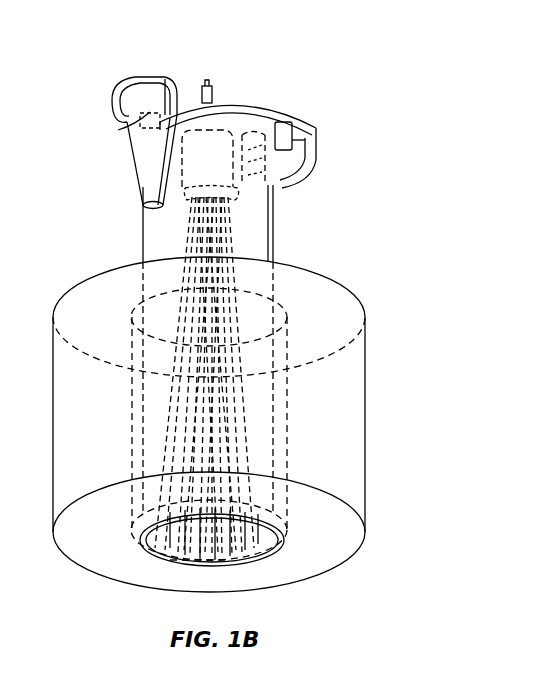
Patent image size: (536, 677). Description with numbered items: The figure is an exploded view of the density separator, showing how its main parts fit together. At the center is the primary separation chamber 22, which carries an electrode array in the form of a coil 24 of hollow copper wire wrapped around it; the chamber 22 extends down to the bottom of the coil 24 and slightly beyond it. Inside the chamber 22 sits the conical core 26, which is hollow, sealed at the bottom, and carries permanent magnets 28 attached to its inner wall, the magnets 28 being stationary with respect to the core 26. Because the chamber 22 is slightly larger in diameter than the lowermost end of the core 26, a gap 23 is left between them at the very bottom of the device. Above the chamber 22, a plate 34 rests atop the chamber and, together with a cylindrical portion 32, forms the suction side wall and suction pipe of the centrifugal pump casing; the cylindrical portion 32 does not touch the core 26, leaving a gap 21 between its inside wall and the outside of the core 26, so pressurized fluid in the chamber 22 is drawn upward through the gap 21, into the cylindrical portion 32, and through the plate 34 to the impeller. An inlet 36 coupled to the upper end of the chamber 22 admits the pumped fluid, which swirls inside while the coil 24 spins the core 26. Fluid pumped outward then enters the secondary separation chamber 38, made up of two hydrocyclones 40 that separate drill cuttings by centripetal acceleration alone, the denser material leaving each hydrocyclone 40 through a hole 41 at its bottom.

The gap 21 is at (220, 203).
The primary separation chamber 22 is at (277, 255).
The gap 23 is at (140, 530).
The coil 24 is at (367, 437).
The conical core 26 is at (172, 318).
The permanent magnets 28 is at (187, 555).
The cylindrical portion 32 is at (222, 172).
The plate 34 is at (220, 125).
The inlet 36 is at (278, 125).
The secondary separation chamber 38 is at (132, 83).
The hydrocyclone 40 is at (132, 177).
The hole 41 is at (150, 210).